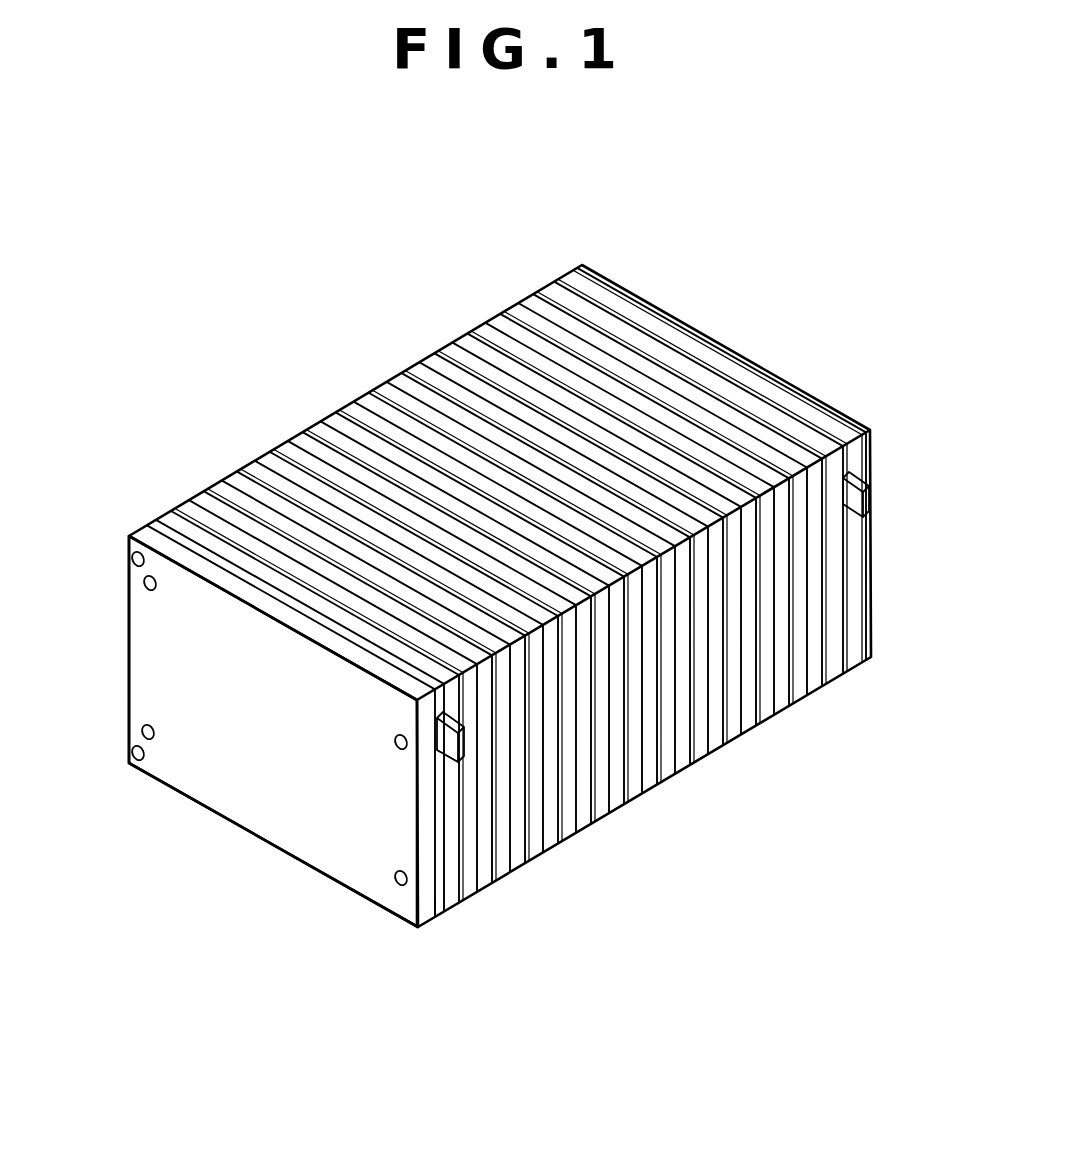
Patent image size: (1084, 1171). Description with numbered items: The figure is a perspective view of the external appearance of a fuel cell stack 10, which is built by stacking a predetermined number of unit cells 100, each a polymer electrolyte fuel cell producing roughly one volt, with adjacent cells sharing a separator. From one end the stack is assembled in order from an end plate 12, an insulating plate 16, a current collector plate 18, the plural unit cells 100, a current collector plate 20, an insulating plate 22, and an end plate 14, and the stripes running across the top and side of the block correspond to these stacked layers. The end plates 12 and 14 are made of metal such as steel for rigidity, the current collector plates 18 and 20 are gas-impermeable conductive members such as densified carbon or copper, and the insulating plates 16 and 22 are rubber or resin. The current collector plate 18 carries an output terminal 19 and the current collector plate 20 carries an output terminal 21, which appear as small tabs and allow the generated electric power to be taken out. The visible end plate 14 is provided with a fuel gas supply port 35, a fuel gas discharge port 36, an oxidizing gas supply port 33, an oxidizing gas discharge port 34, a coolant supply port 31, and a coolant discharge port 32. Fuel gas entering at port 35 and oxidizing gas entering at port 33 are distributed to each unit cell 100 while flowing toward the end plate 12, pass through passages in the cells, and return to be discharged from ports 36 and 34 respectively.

The fuel cell stack 10 is at (345, 384).
The end plate 12 is at (863, 642).
The end plate 14 is at (392, 898).
The insulating plate 16 is at (850, 667).
The current collector plate 18 is at (847, 667).
The output terminal 19 is at (853, 502).
The current collector plate 20 is at (442, 913).
The output terminal 21 is at (447, 762).
The insulating plate 22 is at (437, 917).
The coolant supply port 31 is at (146, 587).
The coolant discharge port 32 is at (141, 733).
The oxidizing gas supply port 33 is at (395, 744).
The oxidizing gas discharge port 34 is at (394, 880).
The fuel gas supply port 35 is at (133, 561).
The fuel gas discharge port 36 is at (129, 764).
The unit cell 100 is at (753, 718).